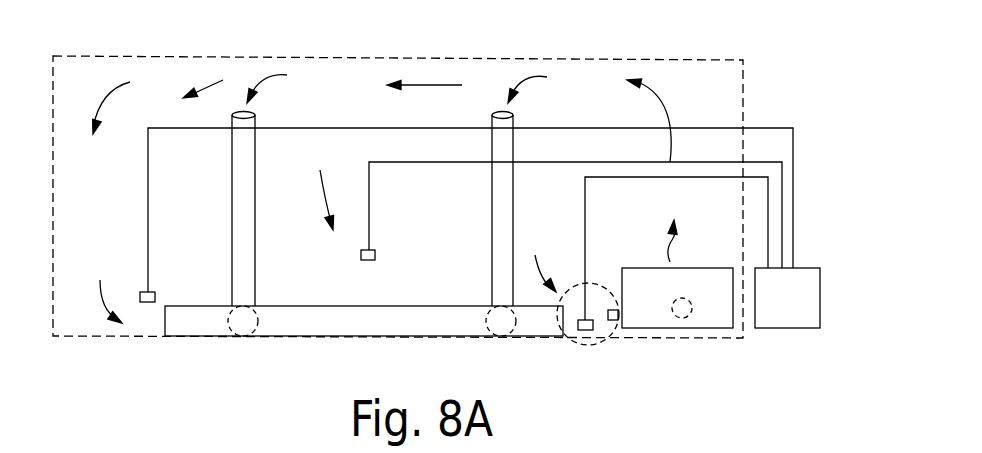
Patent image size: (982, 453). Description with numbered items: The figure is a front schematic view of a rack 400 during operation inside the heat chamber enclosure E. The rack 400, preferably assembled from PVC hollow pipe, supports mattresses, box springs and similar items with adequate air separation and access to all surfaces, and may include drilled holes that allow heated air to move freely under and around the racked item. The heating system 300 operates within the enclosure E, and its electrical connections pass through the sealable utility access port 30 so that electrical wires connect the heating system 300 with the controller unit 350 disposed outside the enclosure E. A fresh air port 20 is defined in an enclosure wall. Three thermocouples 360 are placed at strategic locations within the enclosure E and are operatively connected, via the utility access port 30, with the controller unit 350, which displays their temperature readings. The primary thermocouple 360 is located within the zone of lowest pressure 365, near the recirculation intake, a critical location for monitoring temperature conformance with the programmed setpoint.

The enclosure E is at (720, 70).
The rack 400 is at (285, 318).
The zone of lowest pressure 365 is at (572, 333).
The thermocouple 360 is at (155, 296).
The utility access port 30 is at (612, 310).
The heating system 300 is at (664, 296).
The fresh air port 20 is at (684, 316).
The controller unit 350 is at (804, 297).